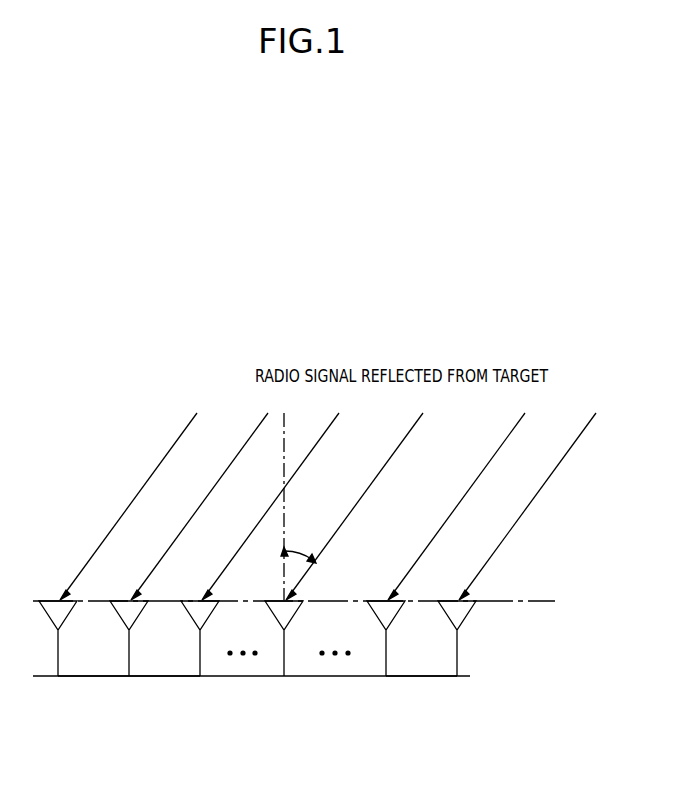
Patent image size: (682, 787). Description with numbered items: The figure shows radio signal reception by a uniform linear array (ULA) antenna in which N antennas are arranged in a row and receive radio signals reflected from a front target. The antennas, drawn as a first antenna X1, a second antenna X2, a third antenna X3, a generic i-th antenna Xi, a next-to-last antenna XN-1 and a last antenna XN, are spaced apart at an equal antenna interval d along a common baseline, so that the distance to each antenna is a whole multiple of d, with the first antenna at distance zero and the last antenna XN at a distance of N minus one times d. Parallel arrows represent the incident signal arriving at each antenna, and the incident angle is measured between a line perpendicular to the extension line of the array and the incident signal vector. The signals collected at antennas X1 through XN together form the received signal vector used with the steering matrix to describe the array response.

The first antenna X1 is at (118, 569).
The second antenna X2 is at (189, 569).
The third antenna X3 is at (260, 569).
The i-th antenna Xi is at (344, 569).
The (N-1)-th antenna XN-1 is at (446, 569).
The N-th antenna XN is at (517, 569).
The antenna interval d is at (257, 687).